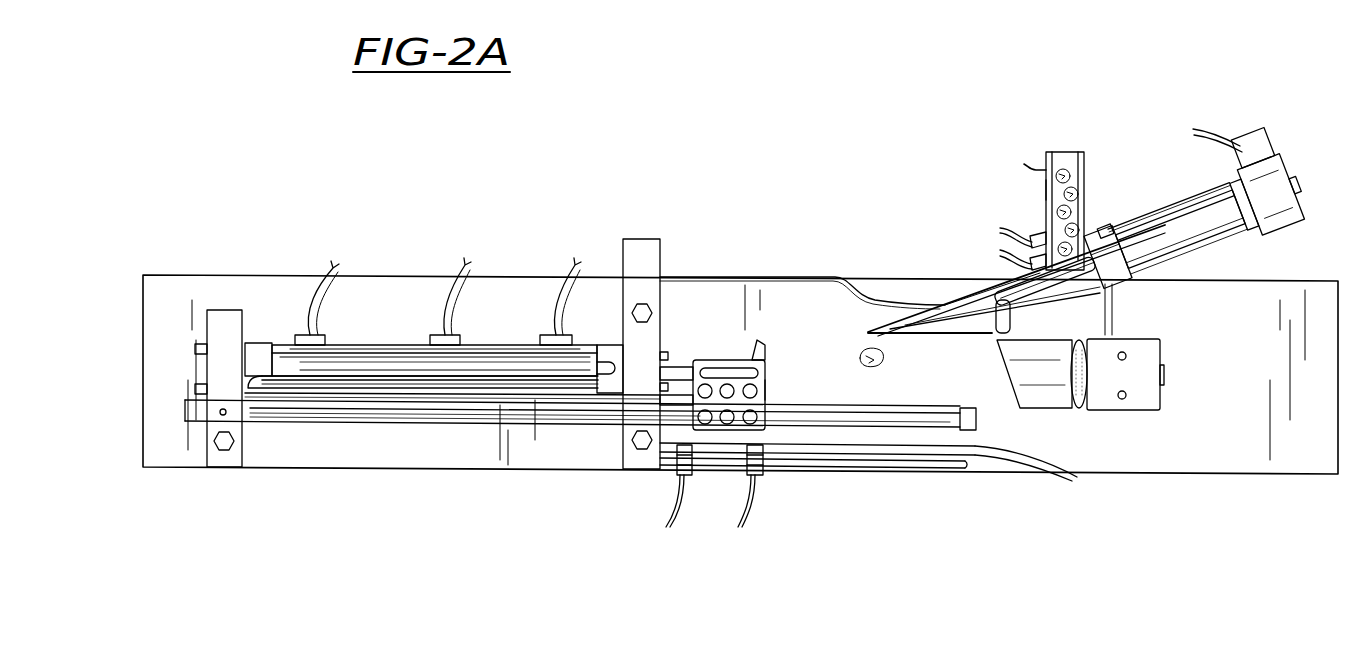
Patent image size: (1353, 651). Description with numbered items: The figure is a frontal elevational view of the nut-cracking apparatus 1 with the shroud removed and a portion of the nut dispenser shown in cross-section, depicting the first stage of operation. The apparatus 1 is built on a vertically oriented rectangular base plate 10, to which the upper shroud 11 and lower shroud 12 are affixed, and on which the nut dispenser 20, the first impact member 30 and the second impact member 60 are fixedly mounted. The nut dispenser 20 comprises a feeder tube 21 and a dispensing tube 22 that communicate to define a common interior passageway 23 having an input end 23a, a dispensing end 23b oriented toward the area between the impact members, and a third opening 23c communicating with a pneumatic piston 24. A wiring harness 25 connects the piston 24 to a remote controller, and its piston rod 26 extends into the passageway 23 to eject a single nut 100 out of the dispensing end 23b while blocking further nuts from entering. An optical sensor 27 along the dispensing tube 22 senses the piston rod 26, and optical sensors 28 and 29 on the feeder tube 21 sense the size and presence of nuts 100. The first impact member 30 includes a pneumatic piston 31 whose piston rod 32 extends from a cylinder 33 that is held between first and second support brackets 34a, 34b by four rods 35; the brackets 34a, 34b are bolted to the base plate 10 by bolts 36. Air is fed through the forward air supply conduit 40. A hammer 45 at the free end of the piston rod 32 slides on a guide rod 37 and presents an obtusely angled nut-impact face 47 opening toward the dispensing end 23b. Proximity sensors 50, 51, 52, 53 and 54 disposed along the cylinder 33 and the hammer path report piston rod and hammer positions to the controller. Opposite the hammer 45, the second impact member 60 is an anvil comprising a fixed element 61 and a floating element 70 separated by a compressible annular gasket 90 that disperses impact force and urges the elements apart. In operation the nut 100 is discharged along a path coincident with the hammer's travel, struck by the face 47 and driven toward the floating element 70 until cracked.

The nut-cracking apparatus 1 is at (815, 97).
The base plate 10 is at (182, 275).
The upper polymeric shroud 11 is at (742, 276).
The lower polymeric shroud 12 is at (1036, 410).
The nut dispenser 20 is at (1158, 177).
The feeder tube 21 is at (1044, 186).
The dispensing tube 22 is at (935, 326).
The interior passageway 23 is at (1000, 337).
The input end 23a is at (1062, 152).
The dispensing end 23b is at (920, 315).
The third opening 23c is at (1100, 296).
The pneumatic piston 24 is at (1240, 226).
The wiring harness 25 is at (1215, 133).
The piston rod 26 is at (1112, 284).
The optical sensor 27 is at (1027, 262).
The optical sensor 28 is at (1033, 236).
The optical sensor 29 is at (1045, 166).
The first impact member 30 is at (217, 557).
The pneumatic piston 31 is at (363, 338).
The piston rod 32 is at (680, 365).
The cylinder 33 is at (500, 364).
The first support bracket 34a is at (222, 462).
The second support bracket 34b is at (620, 466).
The rods 35 is at (290, 340).
The bolts 36 is at (214, 440).
The guide rod 37 is at (375, 423).
The forward air supply conduit 40 is at (440, 400).
The hammer 45 is at (770, 392).
The nut-impact face 47 is at (782, 380).
The proximity sensor 50 is at (303, 332).
The proximity sensor 51 is at (442, 333).
The proximity sensor 52 is at (553, 333).
The proximity sensor 53 is at (676, 472).
The proximity sensor 54 is at (766, 478).
The second impact member 60 is at (1182, 378).
The fixed element 61 is at (1150, 412).
The floating element 70 is at (1002, 448).
The annular gasket 90 is at (1082, 410).
The nut 100 is at (1088, 170).